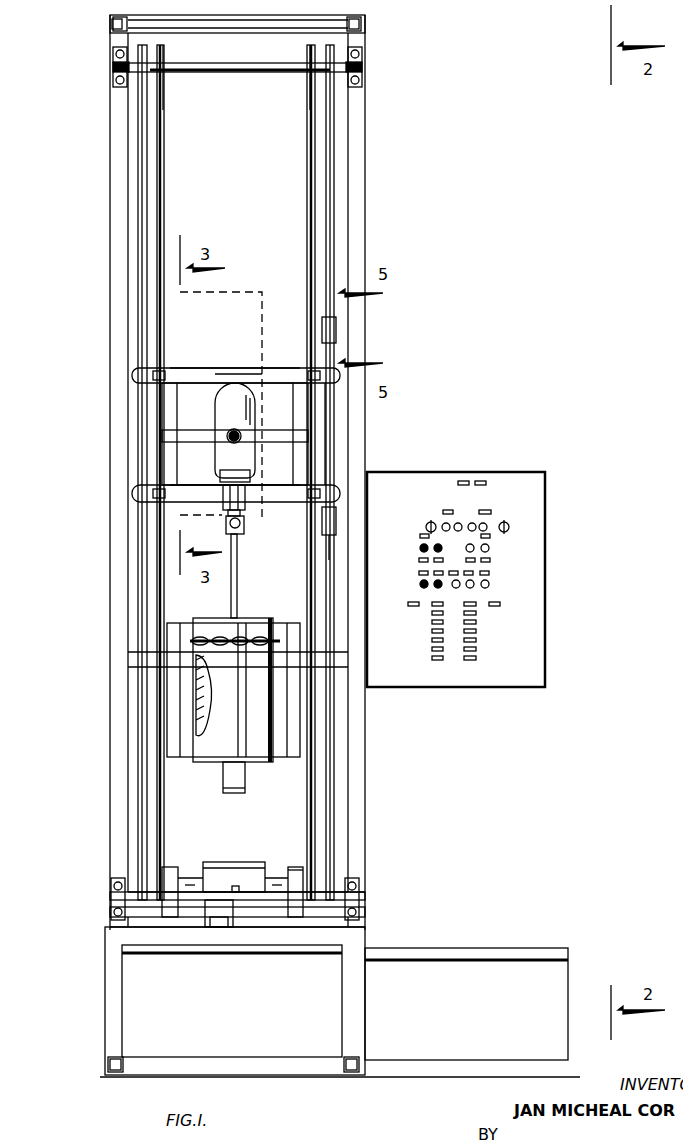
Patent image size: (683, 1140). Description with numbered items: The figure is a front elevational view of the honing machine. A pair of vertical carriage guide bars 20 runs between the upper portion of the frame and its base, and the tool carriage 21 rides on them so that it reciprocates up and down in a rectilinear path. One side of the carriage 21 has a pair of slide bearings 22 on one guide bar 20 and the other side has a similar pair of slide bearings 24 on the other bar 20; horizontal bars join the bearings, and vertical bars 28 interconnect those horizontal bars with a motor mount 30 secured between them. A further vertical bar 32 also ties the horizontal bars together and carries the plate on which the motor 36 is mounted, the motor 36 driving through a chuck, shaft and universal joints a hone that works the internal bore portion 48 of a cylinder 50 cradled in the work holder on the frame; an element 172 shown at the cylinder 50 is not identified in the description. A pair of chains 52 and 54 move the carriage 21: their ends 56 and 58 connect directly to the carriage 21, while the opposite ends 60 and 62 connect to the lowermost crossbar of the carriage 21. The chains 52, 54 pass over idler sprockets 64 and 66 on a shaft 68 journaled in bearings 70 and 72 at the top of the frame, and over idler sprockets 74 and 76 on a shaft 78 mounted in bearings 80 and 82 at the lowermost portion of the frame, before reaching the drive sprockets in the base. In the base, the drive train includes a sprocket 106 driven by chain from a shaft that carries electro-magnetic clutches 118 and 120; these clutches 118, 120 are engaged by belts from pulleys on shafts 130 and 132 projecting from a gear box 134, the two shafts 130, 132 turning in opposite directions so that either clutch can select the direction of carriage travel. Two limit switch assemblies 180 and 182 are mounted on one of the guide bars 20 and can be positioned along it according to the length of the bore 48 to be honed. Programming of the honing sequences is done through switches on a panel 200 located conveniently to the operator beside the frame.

The carriage guide bars 20 is at (145, 183).
The carriage 21 is at (200, 370).
The slide bearings 22 is at (132, 378).
The slide bearings 24 is at (342, 376).
The vertical bars 28 is at (170, 410).
The motor mount 30 is at (177, 434).
The vertical bar 32 is at (258, 376).
The motor 36 is at (235, 432).
The internal bore portion 48 is at (200, 700).
The cylinder 50 is at (258, 740).
The chain 52 is at (143, 300).
The chain 54 is at (316, 246).
The chain end 56 is at (160, 345).
The chain end 58 is at (332, 364).
The chain end 60 is at (158, 500).
The chain end 62 is at (338, 505).
The idler sprocket 64 is at (163, 75).
The idler sprocket 66 is at (310, 77).
The shaft 68 is at (233, 73).
The bearing 70 is at (113, 68).
The bearing 72 is at (362, 70).
The idler sprocket 74 is at (112, 915).
The idler sprocket 76 is at (363, 900).
The shaft 78 is at (218, 925).
The bearing 80 is at (110, 890).
The bearing 82 is at (358, 886).
The sprocket 106 is at (238, 888).
The electro-magnetic clutch 118 is at (168, 862).
The electro-magnetic clutch 120 is at (298, 862).
The shaft 130 is at (190, 874).
The shaft 132 is at (292, 870).
The gear box 134 is at (233, 862).
The chain 172 is at (258, 628).
The limit switch 180 is at (337, 332).
The limit switch 182 is at (337, 525).
The panel 200 is at (524, 612).